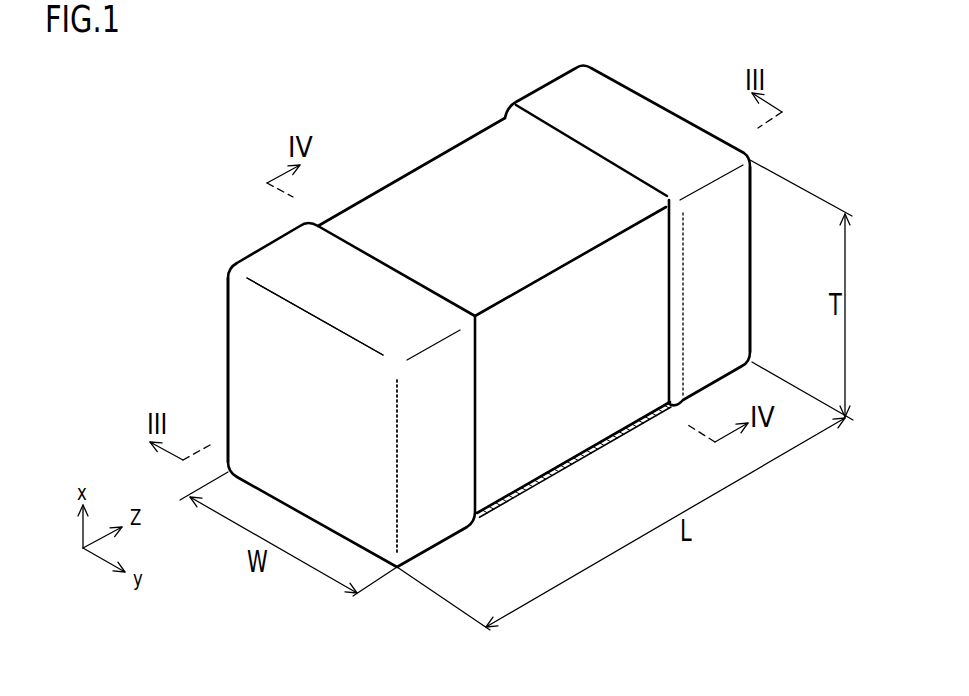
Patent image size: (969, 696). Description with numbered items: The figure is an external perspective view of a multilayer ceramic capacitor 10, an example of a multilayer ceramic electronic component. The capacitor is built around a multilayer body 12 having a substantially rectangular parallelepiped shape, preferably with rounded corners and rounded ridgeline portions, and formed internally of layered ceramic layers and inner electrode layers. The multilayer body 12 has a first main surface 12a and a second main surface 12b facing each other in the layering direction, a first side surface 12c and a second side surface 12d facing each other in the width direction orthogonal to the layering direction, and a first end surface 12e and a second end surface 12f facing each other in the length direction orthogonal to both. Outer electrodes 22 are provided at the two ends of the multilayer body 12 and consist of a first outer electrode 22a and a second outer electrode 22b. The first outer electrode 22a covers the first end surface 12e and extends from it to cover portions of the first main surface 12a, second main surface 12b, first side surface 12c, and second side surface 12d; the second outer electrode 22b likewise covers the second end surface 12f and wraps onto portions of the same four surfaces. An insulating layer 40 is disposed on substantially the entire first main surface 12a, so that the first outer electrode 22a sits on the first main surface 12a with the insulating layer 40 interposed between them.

The multilayer ceramic capacitor 10 is at (253, 139).
The multilayer body 12 is at (407, 176).
The first main surface 12a is at (500, 463).
The second main surface 12b is at (437, 161).
The first side surface 12c is at (552, 452).
The second side surface 12d is at (368, 215).
The first end surface 12e is at (262, 349).
The second end surface 12f is at (630, 130).
The outer electrodes 22 is at (838, 458).
The first outer electrode 22a is at (268, 247).
The second outer electrode 22b is at (537, 86).
The insulating layer 40 is at (627, 430).